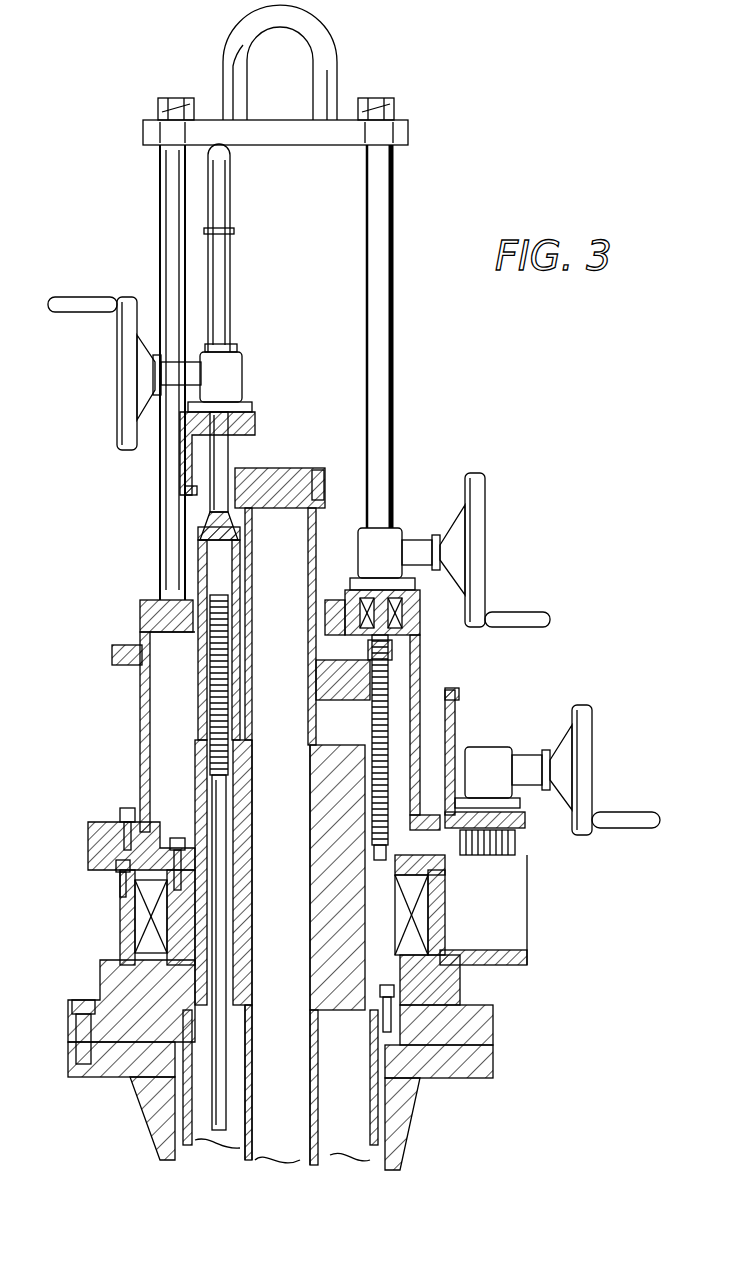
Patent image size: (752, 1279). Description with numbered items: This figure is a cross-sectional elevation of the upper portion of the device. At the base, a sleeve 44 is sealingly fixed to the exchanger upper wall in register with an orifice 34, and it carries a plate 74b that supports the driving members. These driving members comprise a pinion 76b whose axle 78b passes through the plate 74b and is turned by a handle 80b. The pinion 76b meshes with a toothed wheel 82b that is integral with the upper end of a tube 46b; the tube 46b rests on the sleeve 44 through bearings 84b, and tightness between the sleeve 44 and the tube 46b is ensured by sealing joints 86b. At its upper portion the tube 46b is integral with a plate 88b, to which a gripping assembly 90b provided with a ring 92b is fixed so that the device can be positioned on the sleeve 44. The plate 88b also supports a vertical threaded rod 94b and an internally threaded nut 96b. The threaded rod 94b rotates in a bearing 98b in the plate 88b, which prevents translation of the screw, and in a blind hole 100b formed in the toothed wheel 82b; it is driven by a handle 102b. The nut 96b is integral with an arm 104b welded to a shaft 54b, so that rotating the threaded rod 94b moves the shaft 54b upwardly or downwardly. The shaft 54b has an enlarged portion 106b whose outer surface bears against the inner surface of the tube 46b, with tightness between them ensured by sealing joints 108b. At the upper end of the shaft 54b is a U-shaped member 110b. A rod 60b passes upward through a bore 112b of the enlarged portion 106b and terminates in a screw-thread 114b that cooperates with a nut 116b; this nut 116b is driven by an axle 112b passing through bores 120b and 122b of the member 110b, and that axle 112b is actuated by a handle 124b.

The ring 92b is at (228, 57).
The gripping assembly 90b is at (388, 170).
The handle 124b is at (125, 297).
The bore 122b is at (225, 402).
The axle 112b is at (220, 455).
The U-shaped member 110b is at (185, 445).
The bore 120b is at (205, 502).
The screw-thread 114b is at (220, 588).
The nut 116b is at (195, 683).
The rod 60b is at (160, 822).
The orifice 34 is at (160, 1120).
The shaft 54b is at (318, 1130).
The bearing 98b is at (345, 600).
The arm 104b is at (340, 695).
The threaded rod 94b is at (375, 733).
The blind hole 100b is at (378, 843).
The enlarged portion 106b is at (345, 882).
The bearings 84b is at (350, 950).
The sealing joints 108b is at (325, 976).
The plate 88b is at (420, 625).
The nut 96b is at (420, 645).
The handle 102b is at (475, 490).
The axle 78b is at (495, 800).
The handle 80b is at (585, 710).
The plate 74b is at (520, 826).
The pinion 76b is at (460, 848).
The toothed wheel 82b is at (447, 878).
The tube 46b is at (443, 973).
The sealing joints 86b is at (395, 998).
The sleeve 44 is at (493, 1033).